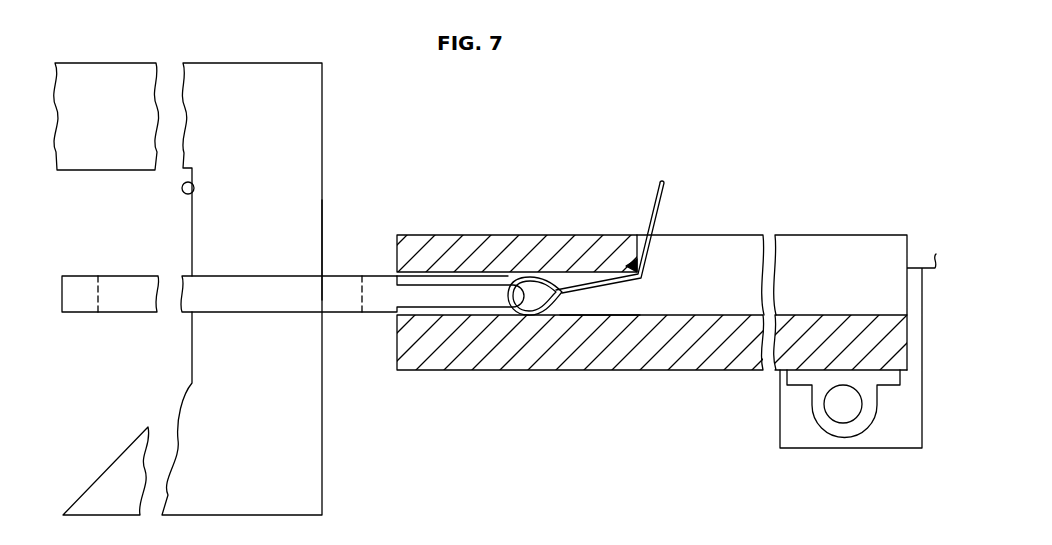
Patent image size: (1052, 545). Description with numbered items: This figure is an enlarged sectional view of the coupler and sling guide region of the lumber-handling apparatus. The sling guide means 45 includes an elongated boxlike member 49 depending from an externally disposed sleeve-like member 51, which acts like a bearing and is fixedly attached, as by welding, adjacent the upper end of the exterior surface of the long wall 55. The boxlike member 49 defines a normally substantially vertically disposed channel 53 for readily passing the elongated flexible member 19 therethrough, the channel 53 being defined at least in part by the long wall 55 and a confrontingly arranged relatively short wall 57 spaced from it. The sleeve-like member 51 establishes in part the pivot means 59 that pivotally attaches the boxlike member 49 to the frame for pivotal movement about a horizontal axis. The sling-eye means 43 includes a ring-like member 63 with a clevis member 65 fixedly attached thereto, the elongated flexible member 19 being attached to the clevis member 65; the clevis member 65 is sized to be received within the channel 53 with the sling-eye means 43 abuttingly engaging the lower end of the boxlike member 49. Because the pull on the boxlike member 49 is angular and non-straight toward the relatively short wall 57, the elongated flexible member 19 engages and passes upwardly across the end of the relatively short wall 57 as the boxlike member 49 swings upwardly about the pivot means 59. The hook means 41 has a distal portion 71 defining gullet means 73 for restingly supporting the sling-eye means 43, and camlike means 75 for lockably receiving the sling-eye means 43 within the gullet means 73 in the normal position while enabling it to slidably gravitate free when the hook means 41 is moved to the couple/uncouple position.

The elongated flexible member 19 is at (660, 200).
The hook means 41 is at (256, 150).
The sling-eye means 43 is at (266, 300).
The sling guide means 45 is at (668, 358).
The elongated boxlike member 49 is at (523, 244).
The sleeve-like member 51 is at (815, 392).
The channel 53 is at (591, 310).
The long wall 55 is at (497, 360).
The relatively short wall 57 is at (468, 243).
The pivot means 59 is at (845, 410).
The ring-like member 63 is at (128, 286).
The clevis member 65 is at (458, 297).
The distal portion 71 is at (312, 250).
The gullet means 73 is at (194, 190).
The camlike means 75 is at (113, 455).